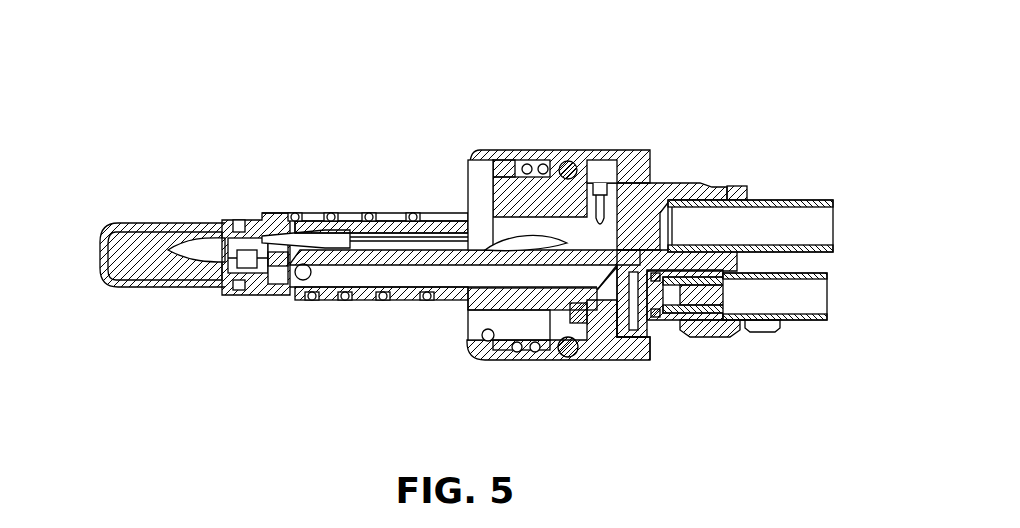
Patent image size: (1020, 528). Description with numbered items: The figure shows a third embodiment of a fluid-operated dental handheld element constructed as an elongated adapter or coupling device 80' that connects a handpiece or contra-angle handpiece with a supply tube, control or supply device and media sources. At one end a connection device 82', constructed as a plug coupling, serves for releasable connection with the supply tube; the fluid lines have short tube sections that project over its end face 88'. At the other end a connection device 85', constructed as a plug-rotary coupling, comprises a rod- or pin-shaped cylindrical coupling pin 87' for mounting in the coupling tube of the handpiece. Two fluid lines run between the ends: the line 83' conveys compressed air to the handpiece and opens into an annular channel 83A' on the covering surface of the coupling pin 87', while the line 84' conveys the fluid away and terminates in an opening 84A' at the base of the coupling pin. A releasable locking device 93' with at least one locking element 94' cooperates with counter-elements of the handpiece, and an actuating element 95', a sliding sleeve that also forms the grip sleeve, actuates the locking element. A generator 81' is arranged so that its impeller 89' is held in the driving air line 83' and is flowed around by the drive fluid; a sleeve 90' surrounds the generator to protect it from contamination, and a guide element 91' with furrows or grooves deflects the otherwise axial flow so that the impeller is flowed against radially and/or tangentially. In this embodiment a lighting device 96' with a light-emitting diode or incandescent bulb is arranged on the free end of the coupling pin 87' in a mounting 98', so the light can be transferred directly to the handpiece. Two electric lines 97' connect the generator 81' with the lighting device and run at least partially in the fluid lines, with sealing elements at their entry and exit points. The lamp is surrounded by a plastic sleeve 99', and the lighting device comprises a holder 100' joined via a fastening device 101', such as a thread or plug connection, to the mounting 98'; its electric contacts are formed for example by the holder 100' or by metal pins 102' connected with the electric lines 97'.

The coupling device 80' is at (479, 227).
The generator 81' is at (713, 349).
The connection device 82' is at (647, 242).
The fluid line 83' is at (792, 319).
The annular channel 83A' is at (465, 297).
The fluid line 84' is at (766, 241).
The opening 84A' is at (499, 205).
The connection device 85' is at (321, 246).
The coupling pin 87' is at (365, 235).
The end face 88' is at (762, 348).
The impeller 89' is at (667, 345).
The sleeve 90' is at (703, 340).
The guide element 91' is at (669, 342).
The locking device 93' is at (557, 145).
The locking element 94' is at (479, 142).
The actuating element 95' is at (558, 347).
The lighting device 96' is at (160, 250).
The electric lines 97' is at (365, 209).
The mounting 98' is at (246, 291).
The sleeve 99' is at (162, 282).
The holder 100' is at (221, 277).
The fastening device 101' is at (250, 296).
The metal pins 102' is at (292, 296).